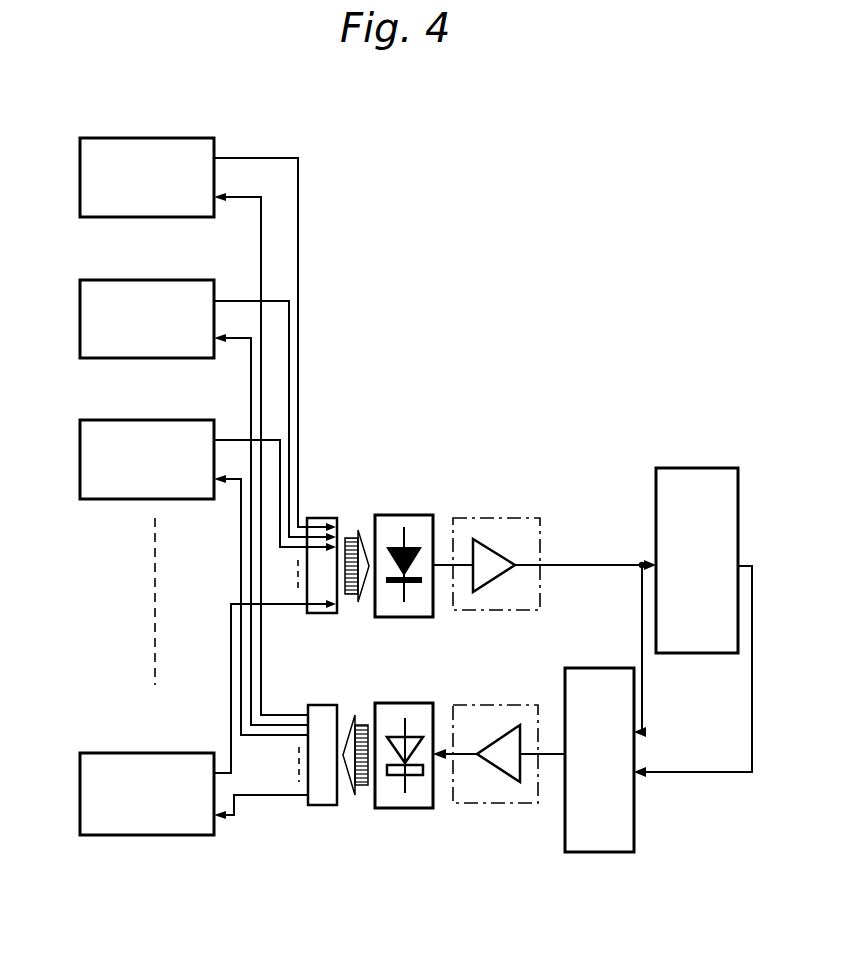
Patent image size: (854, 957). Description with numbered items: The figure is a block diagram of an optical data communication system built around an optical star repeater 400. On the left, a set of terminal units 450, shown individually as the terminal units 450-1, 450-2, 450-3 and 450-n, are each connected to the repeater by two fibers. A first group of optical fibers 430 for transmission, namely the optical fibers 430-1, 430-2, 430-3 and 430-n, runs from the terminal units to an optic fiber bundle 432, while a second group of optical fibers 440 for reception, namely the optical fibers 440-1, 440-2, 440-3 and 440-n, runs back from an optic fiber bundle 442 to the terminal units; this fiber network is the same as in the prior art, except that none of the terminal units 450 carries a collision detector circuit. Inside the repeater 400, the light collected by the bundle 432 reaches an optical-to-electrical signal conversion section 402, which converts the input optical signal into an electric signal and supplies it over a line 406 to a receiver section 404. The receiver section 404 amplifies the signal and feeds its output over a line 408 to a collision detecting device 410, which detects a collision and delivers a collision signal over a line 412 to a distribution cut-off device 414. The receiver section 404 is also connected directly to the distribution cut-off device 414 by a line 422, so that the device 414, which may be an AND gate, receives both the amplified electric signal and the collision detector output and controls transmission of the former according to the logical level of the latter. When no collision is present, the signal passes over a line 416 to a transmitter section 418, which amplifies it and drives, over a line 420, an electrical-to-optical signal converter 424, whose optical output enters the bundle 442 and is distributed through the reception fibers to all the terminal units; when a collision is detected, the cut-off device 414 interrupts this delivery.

The optical star repeater 400 is at (536, 848).
The optical-to-electrical signal conversion section 402 is at (408, 515).
The receiver section 404 is at (496, 518).
The line 406 is at (443, 562).
The line 408 is at (582, 565).
The collision detecting device 410 is at (688, 468).
The line 412 is at (752, 738).
The distribution cut-off device 414 is at (597, 668).
The line 416 is at (552, 752).
The transmitter section 418 is at (507, 705).
The line 420 is at (440, 750).
The line 422 is at (645, 694).
The electrical-to-optical signal converter 424 is at (403, 703).
The first group of optical fibers for transmission 430 is at (326, 465).
The optical fiber for transmission 430-1 is at (300, 276).
The optical fiber for transmission 430-2 is at (290, 327).
The optical fiber for transmission 430-3 is at (283, 446).
The optical fiber for transmission 430-n is at (282, 606).
The optic fiber bundle 432 is at (322, 518).
The second group of optical fibers for reception 440 is at (245, 543).
The optical fiber for reception 440-1 is at (261, 238).
The optical fiber for reception 440-2 is at (251, 380).
The optical fiber for reception 440-3 is at (243, 528).
The optical fiber for reception 440-n is at (253, 795).
The optic fiber bundle 442 is at (322, 705).
The terminal units 450 is at (156, 453).
The terminal unit 450-1 is at (162, 138).
The terminal unit 450-2 is at (130, 270).
The terminal unit 450-3 is at (128, 412).
The terminal unit 450-n is at (126, 742).